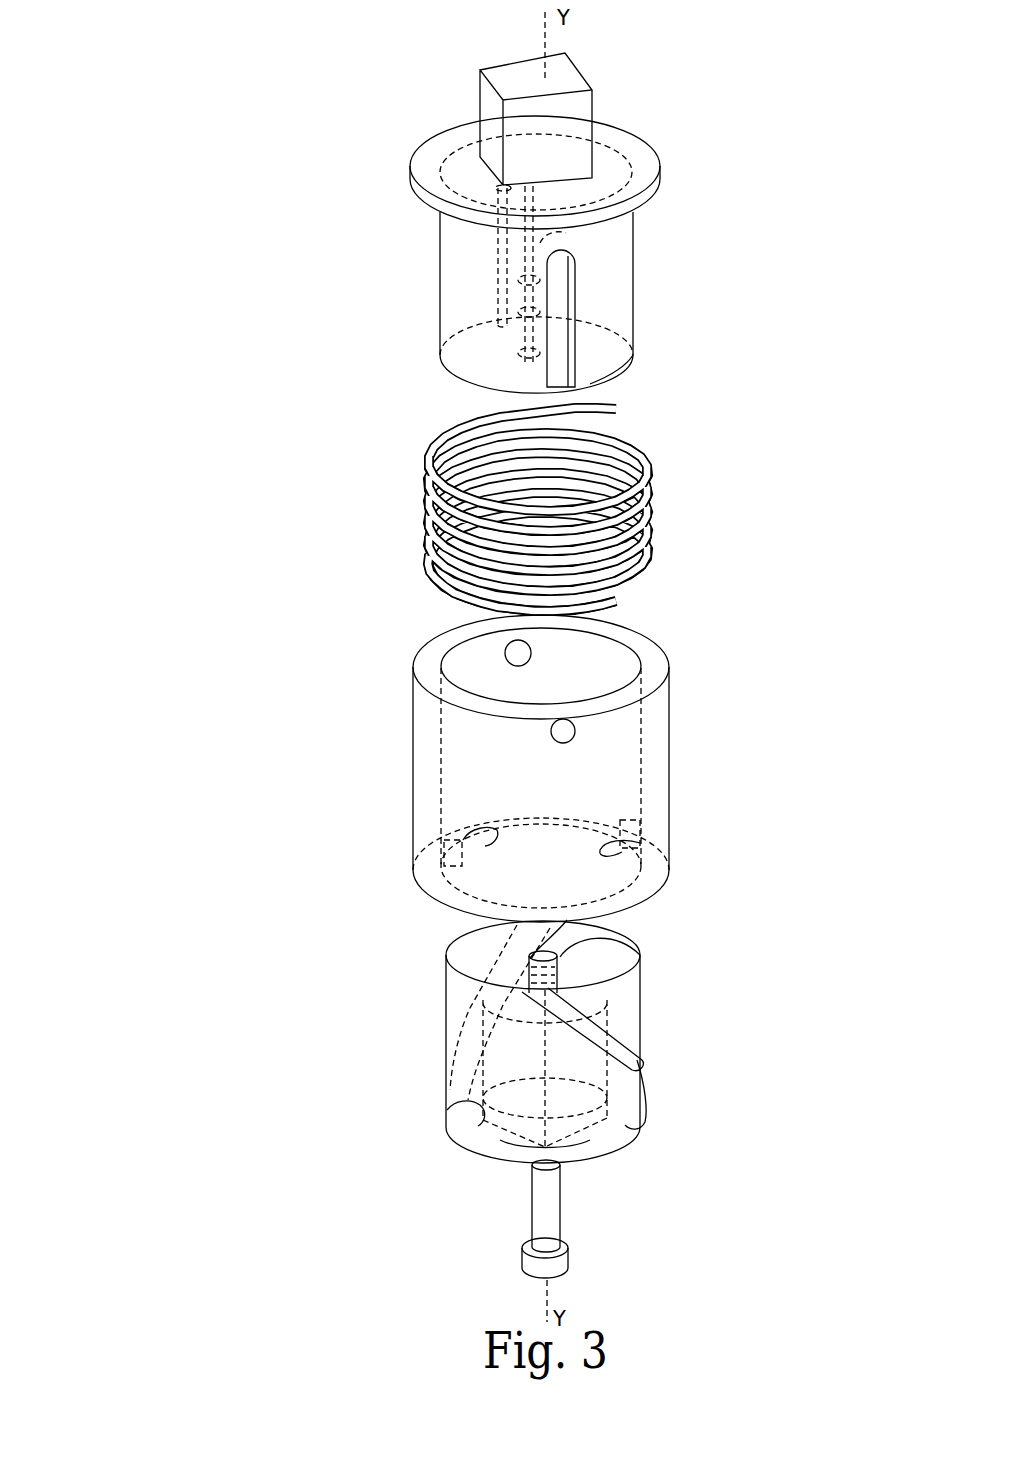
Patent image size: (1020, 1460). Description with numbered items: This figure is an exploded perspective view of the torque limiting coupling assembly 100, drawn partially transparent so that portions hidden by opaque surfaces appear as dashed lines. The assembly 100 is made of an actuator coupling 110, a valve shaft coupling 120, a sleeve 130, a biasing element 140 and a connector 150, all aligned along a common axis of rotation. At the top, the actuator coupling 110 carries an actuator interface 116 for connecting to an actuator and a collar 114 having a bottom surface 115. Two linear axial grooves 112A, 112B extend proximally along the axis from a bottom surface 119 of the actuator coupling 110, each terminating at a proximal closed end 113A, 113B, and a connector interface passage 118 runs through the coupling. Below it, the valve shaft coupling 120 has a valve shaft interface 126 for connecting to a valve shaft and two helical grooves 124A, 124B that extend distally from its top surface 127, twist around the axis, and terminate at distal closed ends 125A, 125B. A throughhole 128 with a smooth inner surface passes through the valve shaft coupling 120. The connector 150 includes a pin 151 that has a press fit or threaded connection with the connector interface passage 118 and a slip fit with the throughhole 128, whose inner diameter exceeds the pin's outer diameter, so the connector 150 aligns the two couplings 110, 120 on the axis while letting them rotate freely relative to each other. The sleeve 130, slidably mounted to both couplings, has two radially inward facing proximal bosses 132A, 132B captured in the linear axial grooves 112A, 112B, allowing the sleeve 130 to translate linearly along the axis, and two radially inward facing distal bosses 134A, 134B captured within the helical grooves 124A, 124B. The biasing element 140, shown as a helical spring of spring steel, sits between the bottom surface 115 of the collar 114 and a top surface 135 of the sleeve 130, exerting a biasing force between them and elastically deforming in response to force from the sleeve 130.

The torque limiting coupling assembly 100 is at (196, 87).
The actuator coupling 110 is at (623, 123).
The linear axial groove 112A is at (575, 293).
The linear axial groove 112B is at (498, 291).
The proximal closed end 113A is at (572, 232).
The proximal closed end 113B is at (530, 186).
The collar 114 is at (660, 152).
The bottom surface 115 is at (647, 205).
The actuator interface 116 is at (580, 67).
The connector interface passage 118 is at (525, 333).
The bottom surface 119 is at (613, 378).
The valve shaft coupling 120 is at (643, 1008).
The helical groove 124A is at (633, 1040).
The helical groove 124B is at (485, 1005).
The distal closed end 125A is at (647, 1140).
The distal closed end 125B is at (467, 1118).
The valve shaft interface 126 is at (512, 1133).
The top surface 127 is at (607, 937).
The throughhole 128 is at (565, 946).
The sleeve 130 is at (670, 789).
The radially inward facing proximal boss 132A is at (578, 740).
The radially inward facing proximal boss 132B is at (512, 641).
The radially inward facing distal boss 134A is at (640, 858).
The radially inward facing distal boss 134B is at (494, 831).
The top surface 135 is at (653, 660).
The biasing element 140 is at (655, 506).
The connector 150 is at (568, 1258).
The pin 151 is at (560, 1200).